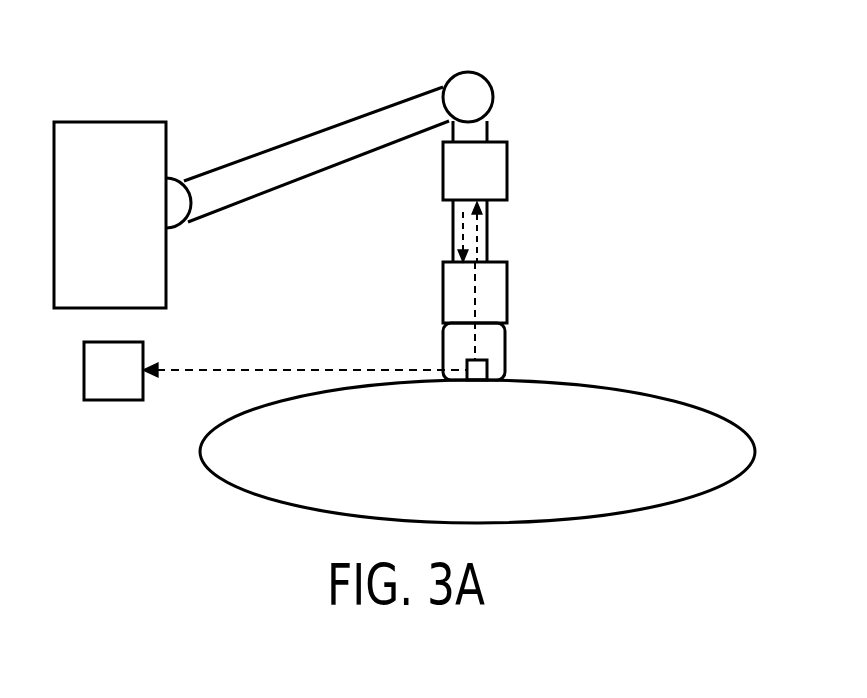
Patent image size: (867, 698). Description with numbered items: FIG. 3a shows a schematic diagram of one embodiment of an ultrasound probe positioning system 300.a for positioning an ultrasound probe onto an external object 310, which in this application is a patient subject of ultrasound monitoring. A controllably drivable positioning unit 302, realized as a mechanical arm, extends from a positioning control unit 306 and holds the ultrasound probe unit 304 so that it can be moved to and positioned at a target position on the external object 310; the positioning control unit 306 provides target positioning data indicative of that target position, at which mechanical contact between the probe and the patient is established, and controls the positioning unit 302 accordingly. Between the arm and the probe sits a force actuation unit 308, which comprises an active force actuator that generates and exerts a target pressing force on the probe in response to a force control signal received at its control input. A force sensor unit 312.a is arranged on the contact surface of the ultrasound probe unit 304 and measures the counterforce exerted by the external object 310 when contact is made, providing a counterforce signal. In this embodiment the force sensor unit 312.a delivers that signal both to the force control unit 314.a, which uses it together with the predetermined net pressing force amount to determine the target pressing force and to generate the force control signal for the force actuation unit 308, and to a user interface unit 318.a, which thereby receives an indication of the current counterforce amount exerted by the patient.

The ultrasound probe positioning system 300.a is at (632, 90).
The positioning unit 302 is at (358, 117).
The ultrasound probe unit 304 is at (505, 343).
The positioning control unit 306 is at (110, 122).
The force actuation unit 308 is at (507, 297).
The external object 310 is at (653, 395).
The force sensor unit 312.a is at (487, 372).
The force control unit 314.a is at (507, 178).
The user interface unit 318.a is at (112, 400).